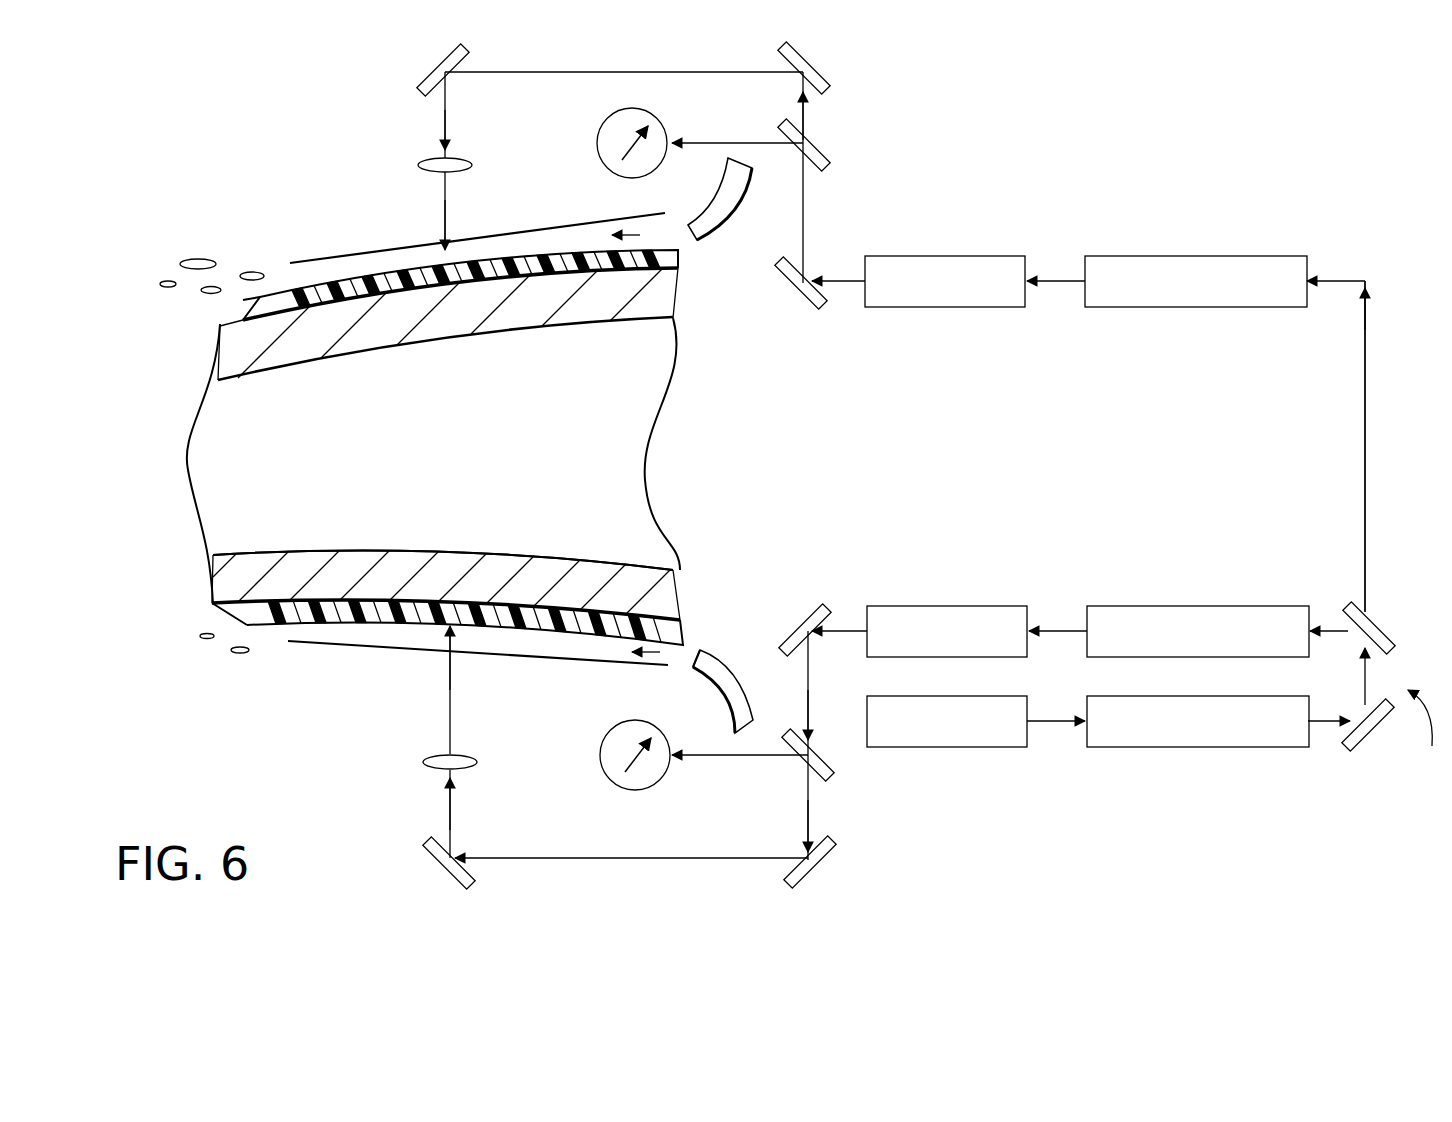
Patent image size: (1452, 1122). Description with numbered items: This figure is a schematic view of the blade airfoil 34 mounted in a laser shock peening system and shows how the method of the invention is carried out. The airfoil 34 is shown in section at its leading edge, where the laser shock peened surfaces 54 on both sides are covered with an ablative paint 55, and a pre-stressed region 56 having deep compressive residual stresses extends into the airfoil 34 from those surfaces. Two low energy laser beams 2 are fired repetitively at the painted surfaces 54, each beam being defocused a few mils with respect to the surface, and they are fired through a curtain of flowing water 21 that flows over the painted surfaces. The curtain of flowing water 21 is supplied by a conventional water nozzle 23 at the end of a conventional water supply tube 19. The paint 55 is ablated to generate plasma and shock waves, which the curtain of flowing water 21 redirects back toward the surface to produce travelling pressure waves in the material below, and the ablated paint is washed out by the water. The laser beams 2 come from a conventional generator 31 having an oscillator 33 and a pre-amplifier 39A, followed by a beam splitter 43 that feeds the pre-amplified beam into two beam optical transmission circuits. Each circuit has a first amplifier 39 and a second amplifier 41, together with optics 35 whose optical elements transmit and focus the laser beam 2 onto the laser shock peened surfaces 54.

The laser beam 2 is at (445, 205).
The water supply tube 19 is at (739, 680).
The curtain of flowing water 21 is at (558, 644).
The water nozzle 23 is at (700, 668).
The generator 31 is at (1076, 456).
The oscillator 33 is at (977, 747).
The airfoil 34 is at (480, 456).
The optics 35 is at (838, 130).
The first amplifier 39 is at (1180, 256).
The pre-amplifier 39A is at (1155, 747).
The second amplifier 41 is at (917, 256).
The beam splitter 43 is at (1411, 734).
The laser shock peened surface 54 is at (224, 328).
The paint 55 is at (268, 625).
The pre-stressed region 56 is at (418, 563).